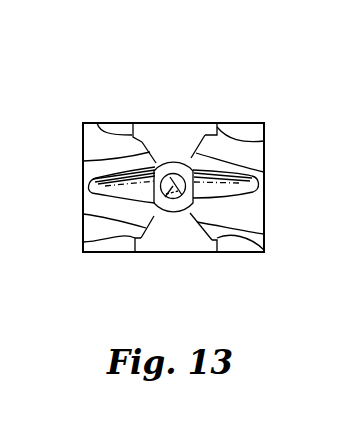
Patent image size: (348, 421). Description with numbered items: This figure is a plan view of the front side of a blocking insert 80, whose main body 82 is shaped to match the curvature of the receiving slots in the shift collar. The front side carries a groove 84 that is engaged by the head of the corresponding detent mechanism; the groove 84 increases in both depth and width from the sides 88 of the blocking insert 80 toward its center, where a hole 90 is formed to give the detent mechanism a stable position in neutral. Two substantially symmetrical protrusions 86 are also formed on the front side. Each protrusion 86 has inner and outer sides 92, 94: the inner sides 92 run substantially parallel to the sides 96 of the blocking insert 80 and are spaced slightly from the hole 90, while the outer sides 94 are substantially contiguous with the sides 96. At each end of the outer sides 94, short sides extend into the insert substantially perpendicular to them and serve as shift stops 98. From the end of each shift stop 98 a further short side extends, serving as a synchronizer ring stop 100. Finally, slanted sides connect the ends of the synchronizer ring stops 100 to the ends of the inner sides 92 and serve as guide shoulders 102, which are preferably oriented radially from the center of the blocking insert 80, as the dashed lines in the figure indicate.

The blocking insert 80 is at (245, 76).
The main body 82 is at (266, 126).
The groove 84 is at (264, 189).
The protrusions 86 is at (174, 133).
The sides 88 is at (87, 184).
The hole 90 is at (165, 207).
The inner sides 92 is at (161, 163).
The outer sides 94 is at (203, 123).
The sides 96 is at (113, 123).
The shift stops 98 is at (97, 123).
The synchronizer ring stops 100 is at (83, 139).
The guide shoulders 102 is at (83, 161).